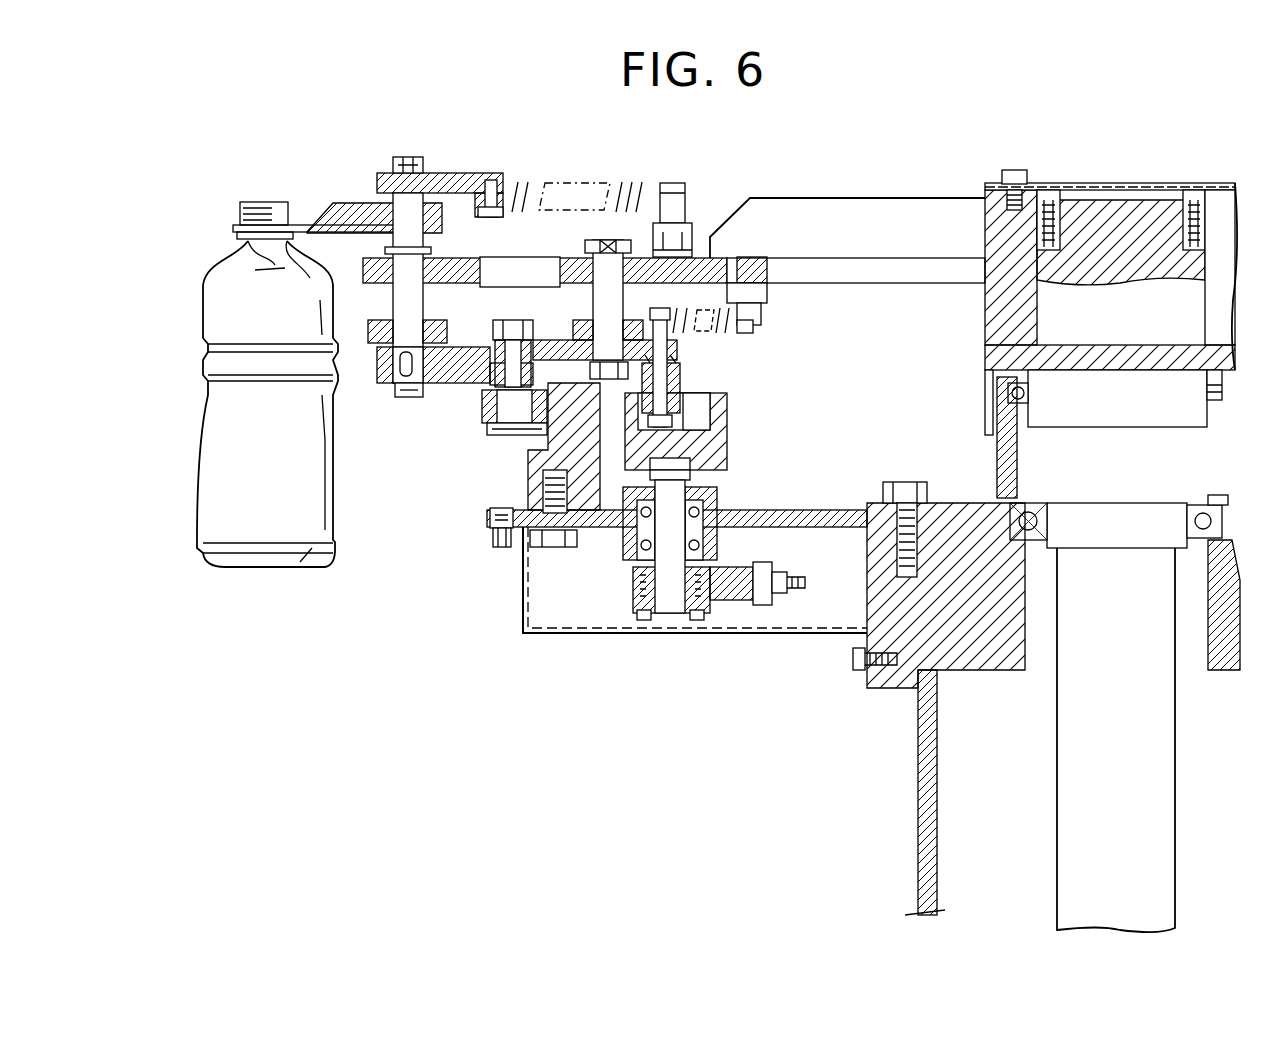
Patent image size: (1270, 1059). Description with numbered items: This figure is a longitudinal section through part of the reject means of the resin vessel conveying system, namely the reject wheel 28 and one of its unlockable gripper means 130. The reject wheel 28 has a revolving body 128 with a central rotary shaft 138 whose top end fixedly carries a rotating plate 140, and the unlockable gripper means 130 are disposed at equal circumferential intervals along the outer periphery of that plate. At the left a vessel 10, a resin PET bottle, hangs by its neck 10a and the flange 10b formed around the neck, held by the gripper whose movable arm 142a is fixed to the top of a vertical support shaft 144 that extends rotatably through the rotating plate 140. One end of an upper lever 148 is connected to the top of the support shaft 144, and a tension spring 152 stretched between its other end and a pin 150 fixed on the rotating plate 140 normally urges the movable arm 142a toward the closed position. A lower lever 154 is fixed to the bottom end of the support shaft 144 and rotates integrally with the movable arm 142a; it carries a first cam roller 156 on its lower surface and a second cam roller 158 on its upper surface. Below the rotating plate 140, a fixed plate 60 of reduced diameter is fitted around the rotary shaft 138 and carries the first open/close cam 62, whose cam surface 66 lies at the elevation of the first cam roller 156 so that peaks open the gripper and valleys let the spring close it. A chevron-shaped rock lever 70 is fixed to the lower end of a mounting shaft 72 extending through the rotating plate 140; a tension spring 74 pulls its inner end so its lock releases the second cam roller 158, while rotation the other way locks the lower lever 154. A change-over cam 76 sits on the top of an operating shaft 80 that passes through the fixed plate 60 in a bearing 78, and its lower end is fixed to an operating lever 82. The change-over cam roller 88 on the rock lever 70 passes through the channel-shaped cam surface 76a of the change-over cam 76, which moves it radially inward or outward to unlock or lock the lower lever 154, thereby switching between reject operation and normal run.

The vessel 10 is at (200, 458).
The neck 10a is at (240, 210).
The flange 10b is at (235, 262).
The movable arm 142a is at (325, 206).
The upper lever 148 is at (452, 172).
The tension spring 152 is at (568, 185).
The pin 150 is at (670, 183).
The reject wheel 28 is at (935, 130).
The unlockable gripper means 130 is at (712, 190).
The revolving body 128 is at (912, 197).
The vertical support shaft 144 is at (410, 308).
The rock lever 70 is at (555, 346).
The mounting shaft 72 is at (615, 312).
The tension spring 74 is at (708, 332).
The rotating plate 140 is at (862, 283).
The change-over cam roller 88 is at (676, 395).
The channel-shaped cam surface 76a is at (710, 402).
The change-over cam 76 is at (722, 442).
The lower lever 154 is at (437, 383).
The second cam roller 158 is at (470, 350).
The first cam roller 156 is at (483, 410).
The cam surface 66 is at (547, 442).
The bearing 78 is at (700, 492).
The fixed plate 60 is at (826, 510).
The first open/close cam 62 is at (597, 493).
The operating shaft 80 is at (673, 606).
The operating lever 82 is at (724, 592).
The rotary shaft 138 is at (1057, 718).